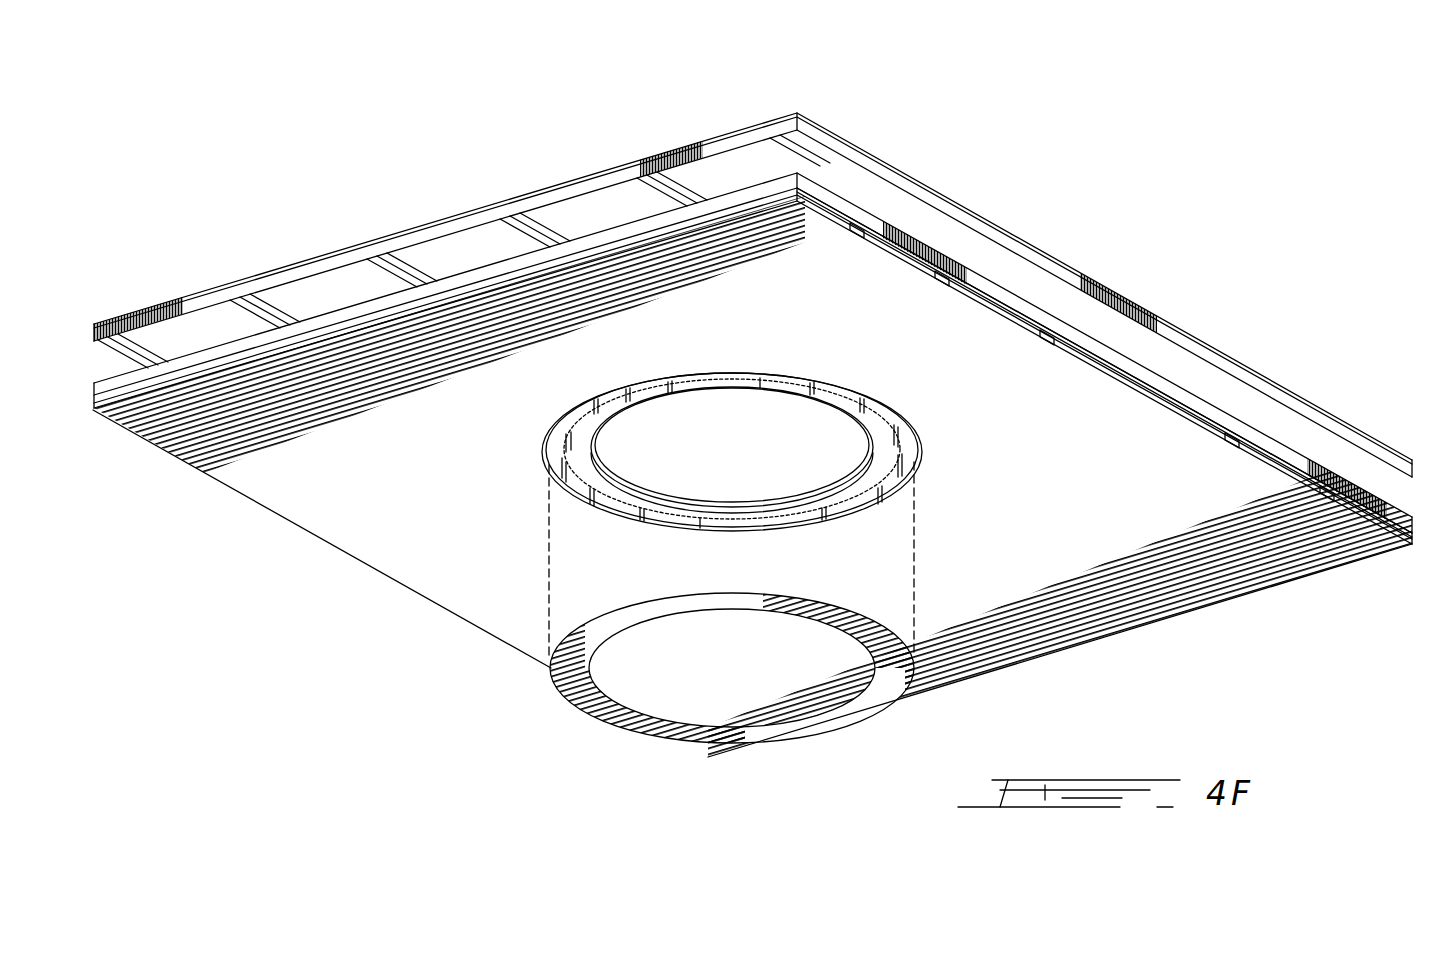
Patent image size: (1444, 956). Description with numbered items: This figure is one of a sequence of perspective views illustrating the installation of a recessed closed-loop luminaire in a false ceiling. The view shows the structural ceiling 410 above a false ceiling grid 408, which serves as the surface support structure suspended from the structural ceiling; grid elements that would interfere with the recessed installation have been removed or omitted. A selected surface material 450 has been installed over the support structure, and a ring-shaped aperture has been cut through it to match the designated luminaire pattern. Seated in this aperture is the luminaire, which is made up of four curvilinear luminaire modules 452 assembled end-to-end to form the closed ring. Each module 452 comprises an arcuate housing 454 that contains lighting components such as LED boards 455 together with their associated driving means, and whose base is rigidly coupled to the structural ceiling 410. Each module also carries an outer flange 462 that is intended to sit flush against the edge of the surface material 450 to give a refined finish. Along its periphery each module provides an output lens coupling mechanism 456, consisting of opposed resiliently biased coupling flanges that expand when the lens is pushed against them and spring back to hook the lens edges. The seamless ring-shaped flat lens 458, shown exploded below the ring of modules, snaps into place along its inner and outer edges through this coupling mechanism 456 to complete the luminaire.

The structural ceiling 410 is at (913, 185).
The false ceiling grid 408 is at (1015, 305).
The surface material 450 is at (1158, 520).
The curvilinear luminaire module 452 is at (733, 388).
The outer flange 462 is at (838, 392).
The output lens coupling mechanism 456 is at (600, 410).
The LED board 455 is at (553, 422).
The arcuate housing 454 is at (910, 473).
The ring-shaped flat lens 458 is at (842, 717).